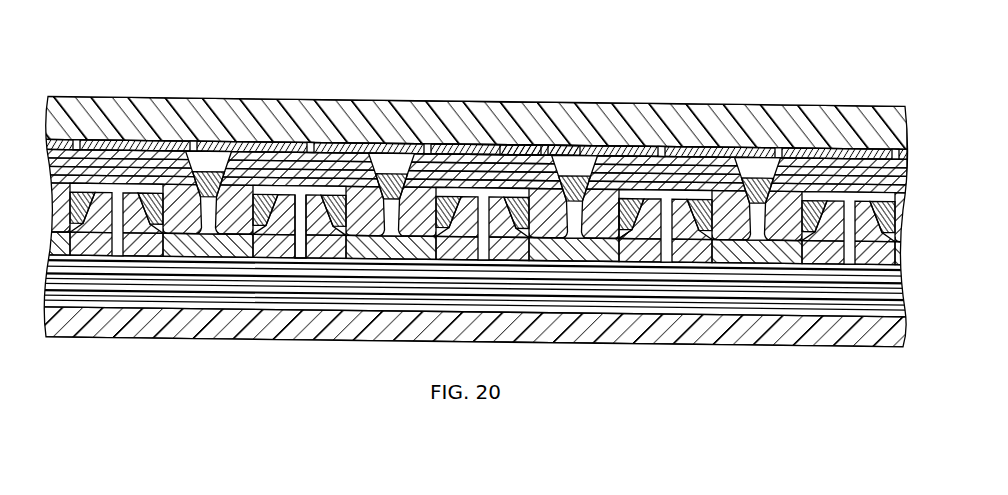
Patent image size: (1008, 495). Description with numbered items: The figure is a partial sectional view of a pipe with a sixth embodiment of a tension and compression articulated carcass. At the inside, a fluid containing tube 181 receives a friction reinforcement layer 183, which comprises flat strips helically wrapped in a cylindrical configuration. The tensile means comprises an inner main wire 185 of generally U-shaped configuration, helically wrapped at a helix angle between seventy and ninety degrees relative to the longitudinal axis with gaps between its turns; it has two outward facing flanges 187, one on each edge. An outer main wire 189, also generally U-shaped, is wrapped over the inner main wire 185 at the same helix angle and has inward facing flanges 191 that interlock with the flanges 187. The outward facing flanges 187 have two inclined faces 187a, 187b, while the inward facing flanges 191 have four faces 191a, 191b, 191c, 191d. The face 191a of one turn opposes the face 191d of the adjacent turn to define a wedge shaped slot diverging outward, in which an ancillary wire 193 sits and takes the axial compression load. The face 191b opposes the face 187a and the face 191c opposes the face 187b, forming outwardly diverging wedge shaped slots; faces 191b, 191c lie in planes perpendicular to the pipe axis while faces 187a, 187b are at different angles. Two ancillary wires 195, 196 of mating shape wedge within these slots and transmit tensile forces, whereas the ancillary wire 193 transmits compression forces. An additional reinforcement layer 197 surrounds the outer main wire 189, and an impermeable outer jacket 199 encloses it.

The fluid containing tube 181 is at (187, 318).
The friction reinforcement layer 183 is at (123, 278).
The inner main wire 185 is at (311, 242).
The outward facing flanges 187 is at (493, 186).
The inclined face 187a is at (704, 224).
The inclined face 187b is at (621, 226).
The outer main wire 189 is at (537, 148).
The inward facing flanges 191 is at (384, 178).
The face 191a is at (775, 165).
The face 191b is at (712, 163).
The face 191c is at (670, 165).
The face 191d is at (586, 150).
The ancillary wire 193 is at (560, 178).
The ancillary wire 195 is at (781, 240).
The ancillary wire 196 is at (621, 236).
The additional reinforcement layer 197 is at (162, 140).
The outer jacket 199 is at (130, 108).